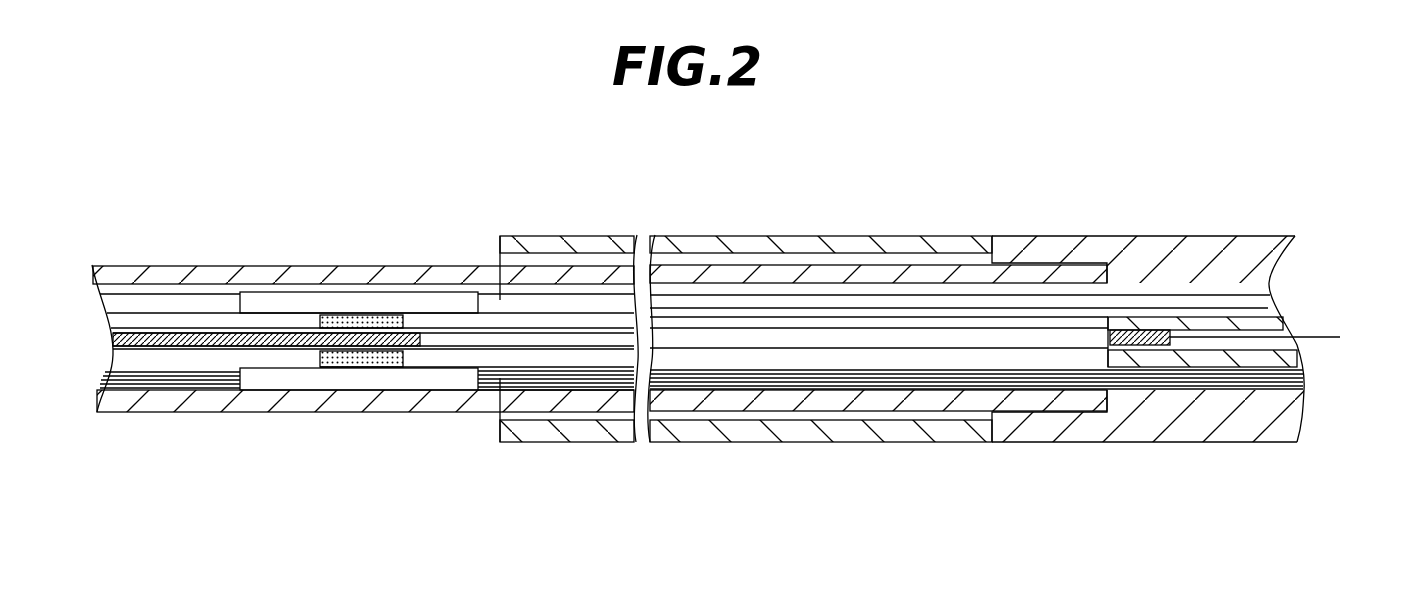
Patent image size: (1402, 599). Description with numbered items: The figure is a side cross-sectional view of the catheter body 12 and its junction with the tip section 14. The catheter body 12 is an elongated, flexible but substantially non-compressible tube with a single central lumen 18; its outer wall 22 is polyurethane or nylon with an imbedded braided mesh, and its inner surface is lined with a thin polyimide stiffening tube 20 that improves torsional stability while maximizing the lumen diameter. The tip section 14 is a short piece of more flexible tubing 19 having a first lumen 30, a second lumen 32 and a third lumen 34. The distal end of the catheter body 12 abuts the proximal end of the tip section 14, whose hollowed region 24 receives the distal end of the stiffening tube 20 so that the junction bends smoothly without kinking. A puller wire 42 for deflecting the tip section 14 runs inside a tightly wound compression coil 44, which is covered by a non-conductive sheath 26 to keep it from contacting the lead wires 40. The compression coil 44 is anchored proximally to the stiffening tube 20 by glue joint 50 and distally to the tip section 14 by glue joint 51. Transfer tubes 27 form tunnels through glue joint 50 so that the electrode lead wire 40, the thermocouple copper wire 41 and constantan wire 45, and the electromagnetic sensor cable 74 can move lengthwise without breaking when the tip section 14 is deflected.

The catheter body 12 is at (893, 212).
The tip section 14 is at (1342, 245).
The central lumen 18 is at (548, 318).
The flexible tubing 19 is at (1243, 258).
The stiffening tube 20 is at (162, 278).
The outer wall 22 is at (753, 247).
The hollowed region 24 is at (1015, 287).
The non-conductive sheath 26 is at (755, 338).
The transfer tubes 27 is at (340, 300).
The first lumen 30 is at (1300, 387).
The second lumen 32 is at (1305, 387).
The third lumen 34 is at (1268, 286).
The lead wire 40 is at (640, 377).
The copper wire 41 is at (568, 380).
The puller wire 42 is at (1302, 332).
The compression coil 44 is at (245, 338).
The constantan wire 45 is at (500, 440).
The glue joint 50 is at (370, 318).
The glue joint 51 is at (1120, 352).
The electromagnetic sensor cable 74 is at (500, 236).